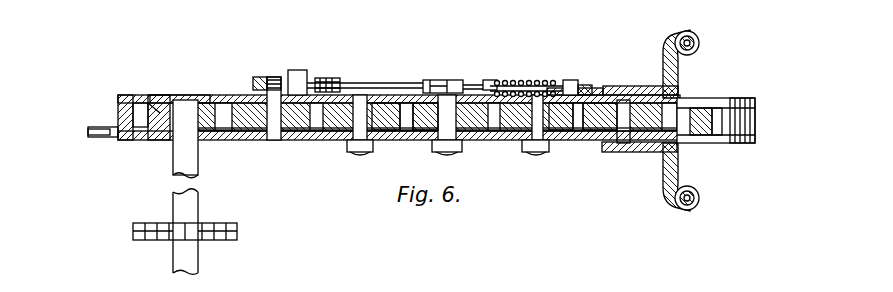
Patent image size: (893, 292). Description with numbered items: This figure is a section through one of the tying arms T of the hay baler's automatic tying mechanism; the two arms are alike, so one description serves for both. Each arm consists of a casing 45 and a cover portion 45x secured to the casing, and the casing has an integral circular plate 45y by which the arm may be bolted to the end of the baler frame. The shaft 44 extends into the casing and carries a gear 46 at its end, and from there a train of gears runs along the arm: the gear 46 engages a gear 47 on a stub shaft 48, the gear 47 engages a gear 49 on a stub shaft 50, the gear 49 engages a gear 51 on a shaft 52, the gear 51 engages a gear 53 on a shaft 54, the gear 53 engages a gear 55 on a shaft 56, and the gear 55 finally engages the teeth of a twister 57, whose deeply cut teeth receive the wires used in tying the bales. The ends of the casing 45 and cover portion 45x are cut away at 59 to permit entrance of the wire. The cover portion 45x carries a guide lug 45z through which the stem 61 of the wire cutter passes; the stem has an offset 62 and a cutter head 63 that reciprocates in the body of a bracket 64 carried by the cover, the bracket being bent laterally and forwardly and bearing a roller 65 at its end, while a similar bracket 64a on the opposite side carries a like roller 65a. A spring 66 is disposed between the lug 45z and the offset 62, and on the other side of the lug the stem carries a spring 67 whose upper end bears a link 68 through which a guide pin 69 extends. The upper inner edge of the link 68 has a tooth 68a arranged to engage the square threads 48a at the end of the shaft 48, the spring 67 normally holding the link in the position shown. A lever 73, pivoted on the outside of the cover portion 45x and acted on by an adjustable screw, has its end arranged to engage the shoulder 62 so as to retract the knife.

The shaft 44 is at (172, 170).
The casing 45 is at (246, 135).
The cover portion 45x is at (179, 95).
The circular plate 45y is at (109, 141).
The guide lug 45z is at (487, 80).
The gear 46 is at (155, 113).
The gear 47 is at (246, 118).
The stub shaft 48 is at (271, 141).
The square threads 48a is at (273, 77).
The gear 49 is at (388, 122).
The stub shaft 50 is at (355, 152).
The gear 51 is at (418, 115).
The shaft 52 is at (460, 122).
The gear 53 is at (563, 124).
The shaft 54 is at (535, 130).
The gear 55 is at (598, 124).
The shaft 56 is at (643, 153).
The twister 57 is at (720, 117).
The cut-away portion 59 is at (744, 99).
The cutter stem 61 is at (468, 80).
The offset 62 is at (568, 80).
The cutter head 63 is at (657, 92).
The bracket 64 is at (615, 86).
The bracket 64a is at (615, 152).
The roller 65 is at (700, 43).
The roller 65a is at (700, 196).
The spring 66 is at (515, 80).
The spring 67 is at (368, 83).
The link 68 is at (322, 78).
The tooth 68a is at (262, 77).
The guide pin 69 is at (297, 70).
The lever 73 is at (587, 85).
The tying arm T is at (332, 141).